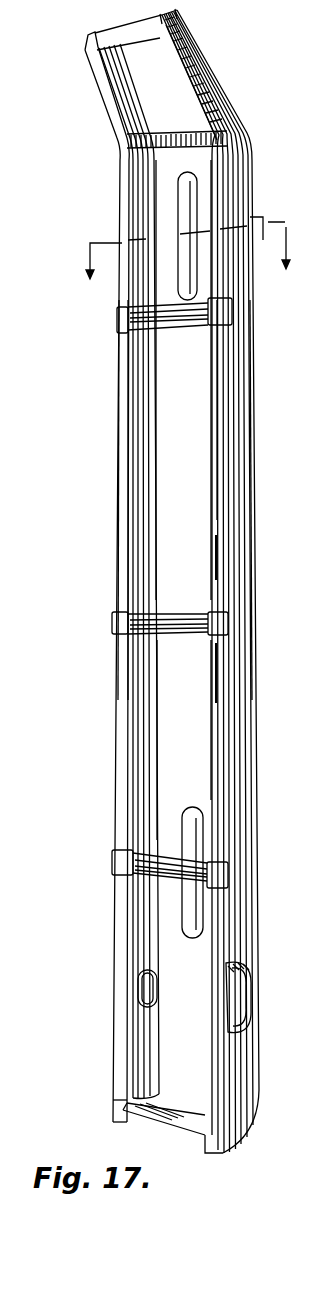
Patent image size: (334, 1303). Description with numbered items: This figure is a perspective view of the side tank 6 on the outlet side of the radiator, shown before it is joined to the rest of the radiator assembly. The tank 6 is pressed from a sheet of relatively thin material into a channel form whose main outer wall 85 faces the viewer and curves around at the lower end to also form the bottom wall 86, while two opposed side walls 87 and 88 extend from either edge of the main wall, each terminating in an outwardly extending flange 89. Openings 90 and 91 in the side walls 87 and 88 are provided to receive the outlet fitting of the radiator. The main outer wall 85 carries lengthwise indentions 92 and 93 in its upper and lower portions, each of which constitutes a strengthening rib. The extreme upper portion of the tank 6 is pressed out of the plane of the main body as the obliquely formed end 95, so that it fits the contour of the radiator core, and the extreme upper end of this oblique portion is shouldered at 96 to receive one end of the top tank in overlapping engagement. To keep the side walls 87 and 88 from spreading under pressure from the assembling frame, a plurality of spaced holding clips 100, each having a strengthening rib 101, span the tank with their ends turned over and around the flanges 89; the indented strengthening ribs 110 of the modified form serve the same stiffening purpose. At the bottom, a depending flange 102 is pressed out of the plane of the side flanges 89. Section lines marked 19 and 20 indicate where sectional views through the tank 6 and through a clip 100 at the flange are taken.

The side tank 6 is at (253, 461).
The section line 19- 19 is at (63, 292).
The section line 20- 20 is at (232, 547).
The main outer wall 85 is at (177, 433).
The bottom wall 86 is at (147, 1118).
The side wall 87 is at (135, 512).
The side wall 88 is at (242, 503).
The outwardly extending flange 89 is at (216, 514).
The opening 90 is at (145, 989).
The opening 91 is at (274, 990).
The indention 92 is at (192, 190).
The indention 93 is at (193, 768).
The obliquely formed end 95 is at (223, 81).
The shoulder 96 is at (188, 30).
The holding clip 100 is at (193, 327).
The strengthening rib 101 is at (178, 623).
The depending flange 102 is at (178, 1132).
The indented strengthening rib 110 is at (184, 740).